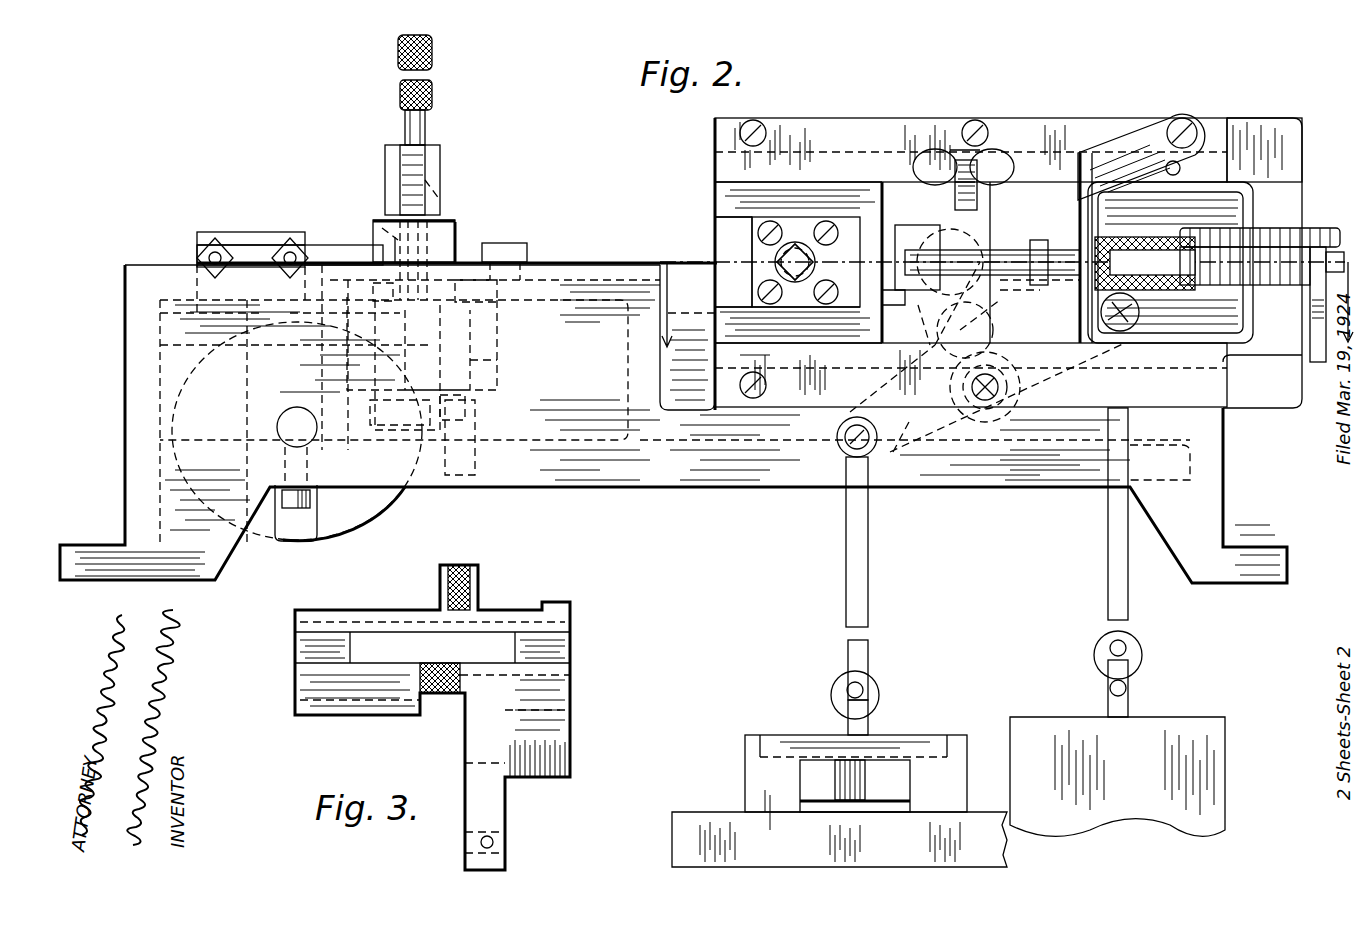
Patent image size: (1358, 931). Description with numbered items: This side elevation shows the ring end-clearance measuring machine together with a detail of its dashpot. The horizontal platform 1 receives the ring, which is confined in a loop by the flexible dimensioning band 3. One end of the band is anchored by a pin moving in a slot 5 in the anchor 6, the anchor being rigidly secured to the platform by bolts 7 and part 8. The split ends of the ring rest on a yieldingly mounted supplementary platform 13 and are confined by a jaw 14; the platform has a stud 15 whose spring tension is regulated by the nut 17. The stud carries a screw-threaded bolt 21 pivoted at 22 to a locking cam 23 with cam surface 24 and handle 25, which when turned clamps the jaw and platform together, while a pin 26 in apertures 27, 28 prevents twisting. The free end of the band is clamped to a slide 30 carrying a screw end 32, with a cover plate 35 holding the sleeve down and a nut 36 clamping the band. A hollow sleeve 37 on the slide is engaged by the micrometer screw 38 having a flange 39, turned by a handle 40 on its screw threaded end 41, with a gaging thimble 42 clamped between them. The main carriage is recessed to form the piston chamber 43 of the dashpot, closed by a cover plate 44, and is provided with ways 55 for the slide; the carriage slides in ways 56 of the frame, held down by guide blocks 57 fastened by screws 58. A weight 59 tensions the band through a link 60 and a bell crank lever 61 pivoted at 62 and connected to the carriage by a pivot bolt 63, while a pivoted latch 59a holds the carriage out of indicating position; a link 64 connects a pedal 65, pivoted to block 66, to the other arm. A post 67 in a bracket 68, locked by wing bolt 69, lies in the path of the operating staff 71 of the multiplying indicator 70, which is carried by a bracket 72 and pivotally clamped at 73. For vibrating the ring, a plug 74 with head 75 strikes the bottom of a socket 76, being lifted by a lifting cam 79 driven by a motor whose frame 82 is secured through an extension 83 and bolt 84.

In FIG. 2, the horizontal platform 1 is at (165, 275).
In FIG. 2, the flexible dimensioning band 3 is at (325, 262).
In FIG. 2, the slot 5 is at (528, 252).
In FIG. 2, the anchor 6 is at (482, 244).
In FIG. 2, the bolts 7 is at (290, 250).
In FIG. 2, the part 8 is at (315, 262).
In FIG. 2, the supplementary platform 13 is at (460, 292).
In FIG. 2, the jaw 14 is at (452, 232).
In FIG. 2, the stud 15 is at (425, 440).
In FIG. 2, the nut 17 is at (465, 412).
In FIG. 2, the screw-threaded bolt 21 is at (383, 230).
In FIG. 2, the pivot 22 is at (392, 175).
In FIG. 2, the locking cam 23 is at (400, 190).
In FIG. 2, the cam surface 24 is at (440, 195).
In FIG. 2, the handle 25 is at (397, 55).
In FIG. 2, the pin 26 is at (395, 252).
In FIG. 2, the aperture 27 is at (432, 248).
In FIG. 2, the aperture 28 is at (385, 298).
In FIG. 2, the slide 30 is at (752, 228).
In FIG. 2, the screw end 32 is at (790, 262).
In FIG. 2, the cover plate 35 is at (755, 245).
In FIG. 2, the nut 36 is at (795, 275).
In FIG. 2, the hollow sleeve 37 is at (890, 298).
In FIG. 2, the micrometer screw 38 is at (1008, 245).
In FIG. 2, the flange 39 is at (1030, 305).
In FIG. 2, the handle 40 is at (1185, 290).
In FIG. 2, the screw threaded end 41 is at (1062, 245).
In FIG. 2, the gaging thimble 42 is at (912, 240).
In FIG. 3, the piston chamber 43 is at (398, 625).
In FIG. 2, the cover plate 44 is at (1105, 222).
In FIG. 2, the ways 55 is at (735, 215).
In FIG. 3, the ways 55 is at (330, 710).
In FIG. 2, the ways 56 is at (1225, 150).
In FIG. 2, the guide blocks 57 is at (1232, 135).
In FIG. 2, the screws 58 is at (760, 126).
In FIG. 2, the weight 59 is at (1165, 730).
In FIG. 2, the pivoted latch 59a is at (1108, 150).
In FIG. 2, the link 60 is at (1108, 560).
In FIG. 2, the bell crank lever 61 is at (987, 364).
In FIG. 2, the pivot 62 is at (1015, 372).
In FIG. 2, the pivot bolt 63 is at (959, 329).
In FIG. 2, the link 64 is at (846, 580).
In FIG. 2, the pedal 65 is at (925, 745).
In FIG. 2, the block 66 is at (760, 812).
In FIG. 2, the post 67 is at (1040, 248).
In FIG. 2, the bracket 68 is at (940, 215).
In FIG. 3, the bracket 68 is at (505, 812).
In FIG. 2, the wing bolt 69 is at (938, 160).
In FIG. 2, the multiplying indicator 70 is at (1262, 227).
In FIG. 2, the operating staff 71 is at (1136, 312).
In FIG. 2, the bracket 72 is at (1302, 410).
In FIG. 2, the pivotal clamp 73 is at (1320, 228).
In FIG. 2, the plug 74 is at (470, 372).
In FIG. 2, the head 75 is at (480, 348).
In FIG. 2, the socket 76 is at (497, 388).
In FIG. 2, the lifting cam 79 is at (475, 455).
In FIG. 2, the motor frame 82 is at (370, 505).
In FIG. 2, the extension 83 is at (280, 427).
In FIG. 2, the bolt 84 is at (310, 536).